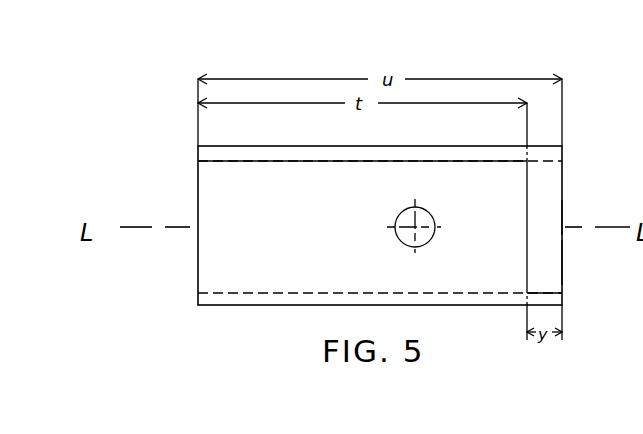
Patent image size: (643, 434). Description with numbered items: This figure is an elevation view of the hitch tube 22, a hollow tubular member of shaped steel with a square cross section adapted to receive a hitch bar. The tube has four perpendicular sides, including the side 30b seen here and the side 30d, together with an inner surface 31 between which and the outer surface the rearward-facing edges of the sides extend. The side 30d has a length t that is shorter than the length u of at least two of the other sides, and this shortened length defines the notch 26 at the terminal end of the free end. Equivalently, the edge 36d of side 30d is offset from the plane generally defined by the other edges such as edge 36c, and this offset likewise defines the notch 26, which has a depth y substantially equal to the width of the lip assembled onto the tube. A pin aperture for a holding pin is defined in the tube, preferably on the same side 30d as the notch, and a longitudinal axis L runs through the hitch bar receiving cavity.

The tube 22 is at (547, 45).
The notch 26 is at (549, 192).
The inner surface 31 is at (554, 216).
The side 30b is at (556, 262).
The edge 36c is at (562, 302).
The edge 36d is at (527, 205).
The side 30d is at (286, 211).